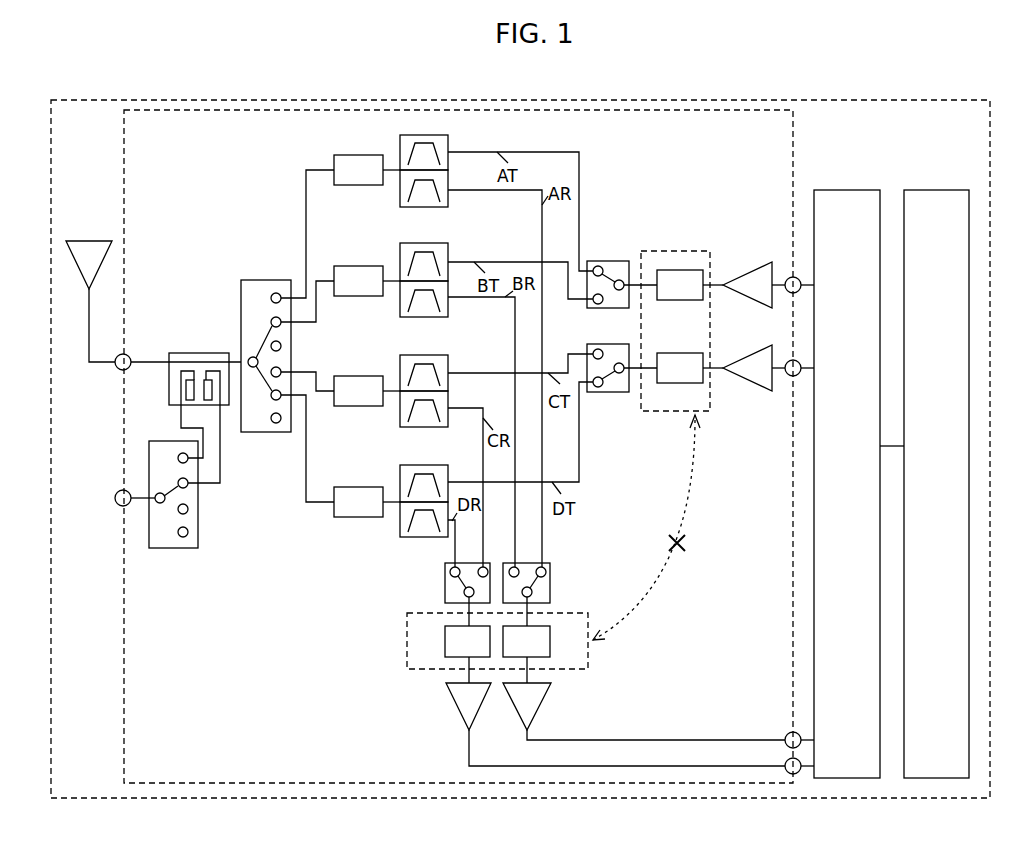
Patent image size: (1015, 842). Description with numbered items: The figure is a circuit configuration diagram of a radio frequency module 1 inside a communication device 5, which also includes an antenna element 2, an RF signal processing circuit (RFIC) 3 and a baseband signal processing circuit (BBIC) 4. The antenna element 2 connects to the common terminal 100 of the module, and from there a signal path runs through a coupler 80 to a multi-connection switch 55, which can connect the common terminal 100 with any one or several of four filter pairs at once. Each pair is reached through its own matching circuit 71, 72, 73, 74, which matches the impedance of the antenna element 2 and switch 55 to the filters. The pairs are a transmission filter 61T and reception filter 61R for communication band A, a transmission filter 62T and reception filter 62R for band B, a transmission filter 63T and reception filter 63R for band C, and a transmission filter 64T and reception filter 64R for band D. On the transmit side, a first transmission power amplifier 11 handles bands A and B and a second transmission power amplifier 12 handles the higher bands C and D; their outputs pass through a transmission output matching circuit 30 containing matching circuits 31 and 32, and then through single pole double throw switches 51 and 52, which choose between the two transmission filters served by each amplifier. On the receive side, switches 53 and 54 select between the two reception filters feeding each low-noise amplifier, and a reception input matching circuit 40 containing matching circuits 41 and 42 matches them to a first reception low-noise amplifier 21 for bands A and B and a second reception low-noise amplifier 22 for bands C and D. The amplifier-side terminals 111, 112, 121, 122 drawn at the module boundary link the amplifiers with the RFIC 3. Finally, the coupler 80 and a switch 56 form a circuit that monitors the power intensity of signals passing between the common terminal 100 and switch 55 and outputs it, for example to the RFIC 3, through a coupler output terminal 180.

The radio frequency module 1 is at (796, 146).
The antenna element 2 is at (85, 241).
The RF signal processing circuit (RFIC) 3 is at (843, 188).
The baseband signal processing circuit (BBIC) 4 is at (930, 188).
The communication device 5 is at (944, 100).
The transmission power amplifier 11 is at (751, 271).
The transmission power amplifier 12 is at (743, 380).
The reception low-noise amplifier 21 is at (544, 698).
The reception low-noise amplifier 22 is at (453, 699).
The transmission output matching circuit 30 is at (678, 251).
The matching circuit 31 is at (697, 301).
The matching circuit 32 is at (697, 384).
The reception input matching circuit 40 is at (407, 650).
The matching circuit 41 is at (575, 650).
The matching circuit 42 is at (444, 641).
The switch 51 is at (598, 262).
The switch 52 is at (602, 392).
The switch 53 is at (550, 588).
The switch 54 is at (444, 593).
The switch 55 is at (255, 279).
The switch 56 is at (185, 549).
The transmission filter 61T is at (449, 137).
The reception filter 61R is at (449, 202).
The transmission filter 62T is at (449, 245).
The reception filter 62R is at (449, 310).
The transmission filter 63T is at (449, 357).
The reception filter 63R is at (449, 402).
The transmission filter 64T is at (398, 468).
The reception filter 64R is at (398, 536).
The matching circuit 71 is at (365, 154).
The matching circuit 72 is at (365, 266).
The matching circuit 73 is at (365, 376).
The matching circuit 74 is at (365, 487).
The coupler 80 is at (181, 354).
The common terminal 100 is at (117, 368).
The transmission input terminal 111 is at (790, 295).
The transmission input terminal 112 is at (788, 378).
The reception output terminal 121 is at (785, 733).
The reception output terminal 122 is at (785, 762).
The coupler output terminal 180 is at (118, 493).